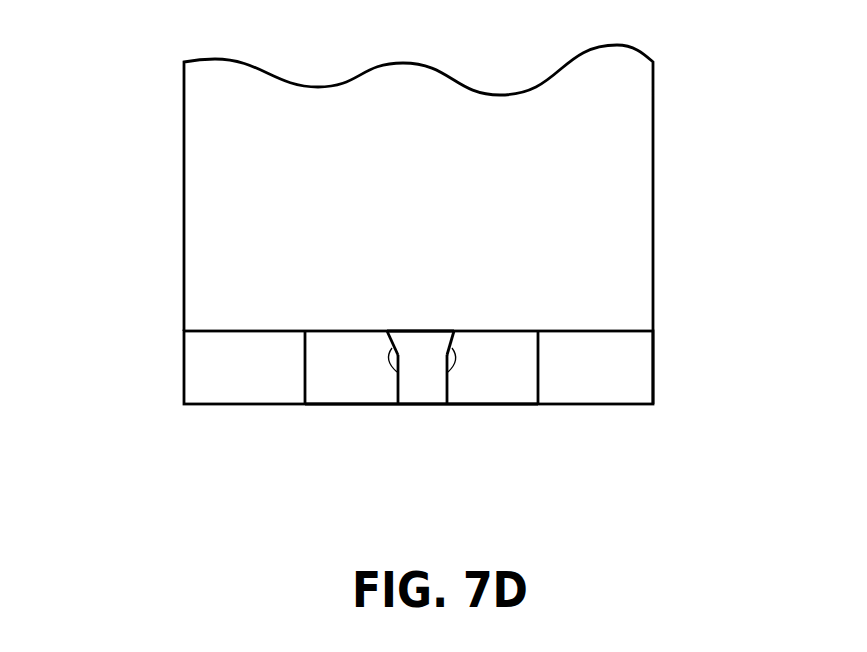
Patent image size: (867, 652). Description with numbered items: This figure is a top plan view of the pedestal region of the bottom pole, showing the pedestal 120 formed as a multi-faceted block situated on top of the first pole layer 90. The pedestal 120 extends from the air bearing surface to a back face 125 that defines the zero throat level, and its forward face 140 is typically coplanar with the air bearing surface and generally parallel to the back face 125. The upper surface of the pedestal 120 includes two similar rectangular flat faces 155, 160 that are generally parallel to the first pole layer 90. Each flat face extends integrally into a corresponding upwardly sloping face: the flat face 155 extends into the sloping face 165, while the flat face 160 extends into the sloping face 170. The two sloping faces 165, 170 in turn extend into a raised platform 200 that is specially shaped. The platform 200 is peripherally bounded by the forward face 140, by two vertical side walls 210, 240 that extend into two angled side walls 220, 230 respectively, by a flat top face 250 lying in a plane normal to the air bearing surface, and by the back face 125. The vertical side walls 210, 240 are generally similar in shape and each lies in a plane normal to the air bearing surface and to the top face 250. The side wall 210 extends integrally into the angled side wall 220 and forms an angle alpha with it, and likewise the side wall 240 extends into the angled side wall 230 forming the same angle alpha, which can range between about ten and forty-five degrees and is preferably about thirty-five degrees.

The first pole layer 90 is at (418, 188).
The pedestal 120 is at (160, 357).
The raised platform 200 is at (656, 341).
The flat face 155 is at (195, 378).
The flat face 160 is at (633, 377).
The sloping face 165 is at (352, 390).
The sloping face 170 is at (488, 390).
The angled side wall 230 is at (387, 342).
The vertical side wall 210 is at (452, 342).
The vertical side wall 240 is at (397, 378).
The angled side wall 220 is at (448, 380).
The forward face 140 is at (418, 407).
The top face 250 is at (417, 343).
The back face 125 is at (435, 340).